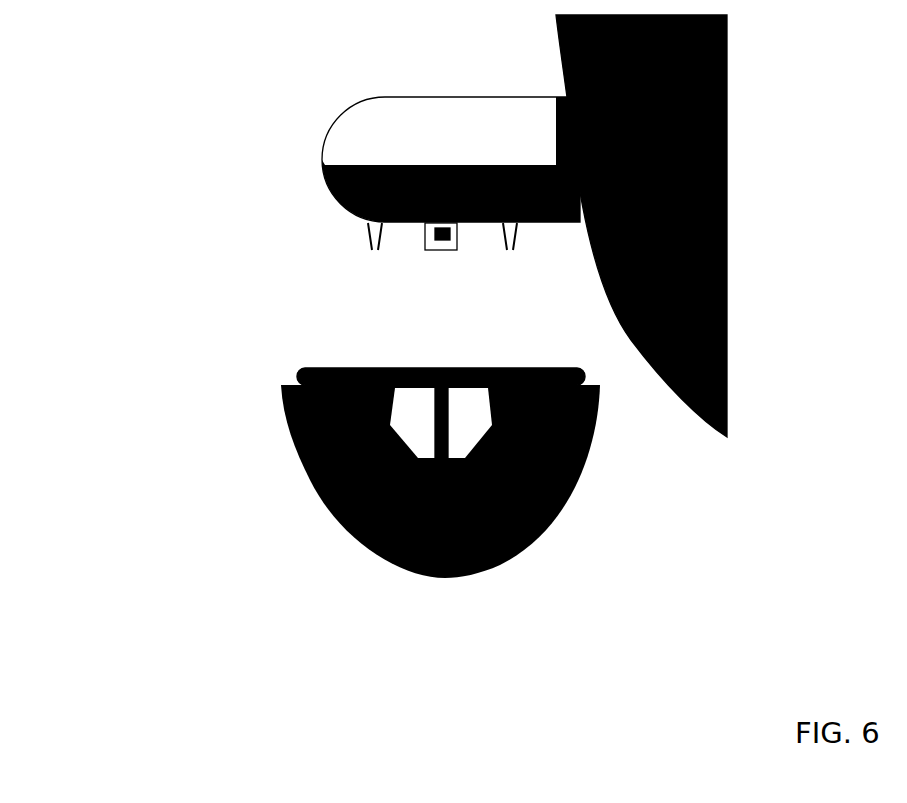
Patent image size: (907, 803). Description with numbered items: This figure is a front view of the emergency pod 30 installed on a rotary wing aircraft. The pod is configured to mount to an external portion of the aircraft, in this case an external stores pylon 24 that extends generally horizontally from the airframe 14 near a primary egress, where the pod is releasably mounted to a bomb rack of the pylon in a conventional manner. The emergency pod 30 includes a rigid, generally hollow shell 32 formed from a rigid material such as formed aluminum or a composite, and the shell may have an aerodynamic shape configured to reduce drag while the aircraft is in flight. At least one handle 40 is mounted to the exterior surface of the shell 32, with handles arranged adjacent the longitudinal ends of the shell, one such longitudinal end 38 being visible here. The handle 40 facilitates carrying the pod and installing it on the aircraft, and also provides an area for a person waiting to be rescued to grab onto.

The airframe 14 is at (648, 278).
The external stores pylon 24 is at (455, 152).
The emergency pod 30 is at (331, 330).
The shell 32 is at (268, 434).
The longitudinal end 38 is at (427, 357).
The handle 40 is at (447, 498).